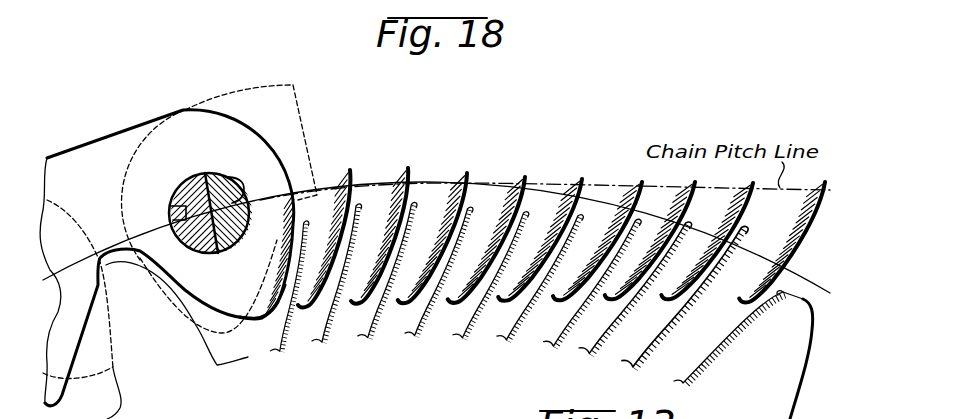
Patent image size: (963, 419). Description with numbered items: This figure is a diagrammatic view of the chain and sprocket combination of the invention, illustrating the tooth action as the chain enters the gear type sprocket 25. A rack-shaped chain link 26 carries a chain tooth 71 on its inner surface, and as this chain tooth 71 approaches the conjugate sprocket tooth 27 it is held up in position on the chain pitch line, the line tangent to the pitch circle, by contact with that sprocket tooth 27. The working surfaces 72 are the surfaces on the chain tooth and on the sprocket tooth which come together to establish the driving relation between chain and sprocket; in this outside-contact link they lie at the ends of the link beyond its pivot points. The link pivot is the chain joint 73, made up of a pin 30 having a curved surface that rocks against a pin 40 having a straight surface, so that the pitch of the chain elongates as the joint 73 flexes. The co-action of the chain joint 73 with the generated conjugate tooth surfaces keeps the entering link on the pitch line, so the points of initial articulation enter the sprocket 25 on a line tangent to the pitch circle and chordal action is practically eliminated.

The gear type sprocket 25 is at (112, 411).
The chain link 26 is at (134, 125).
The sprocket tooth 27 is at (205, 347).
The pin 30 is at (233, 184).
The pin 40 is at (175, 195).
The chain tooth 71 is at (264, 322).
The working surfaces 72 is at (288, 250).
The chain joint 73 is at (188, 171).